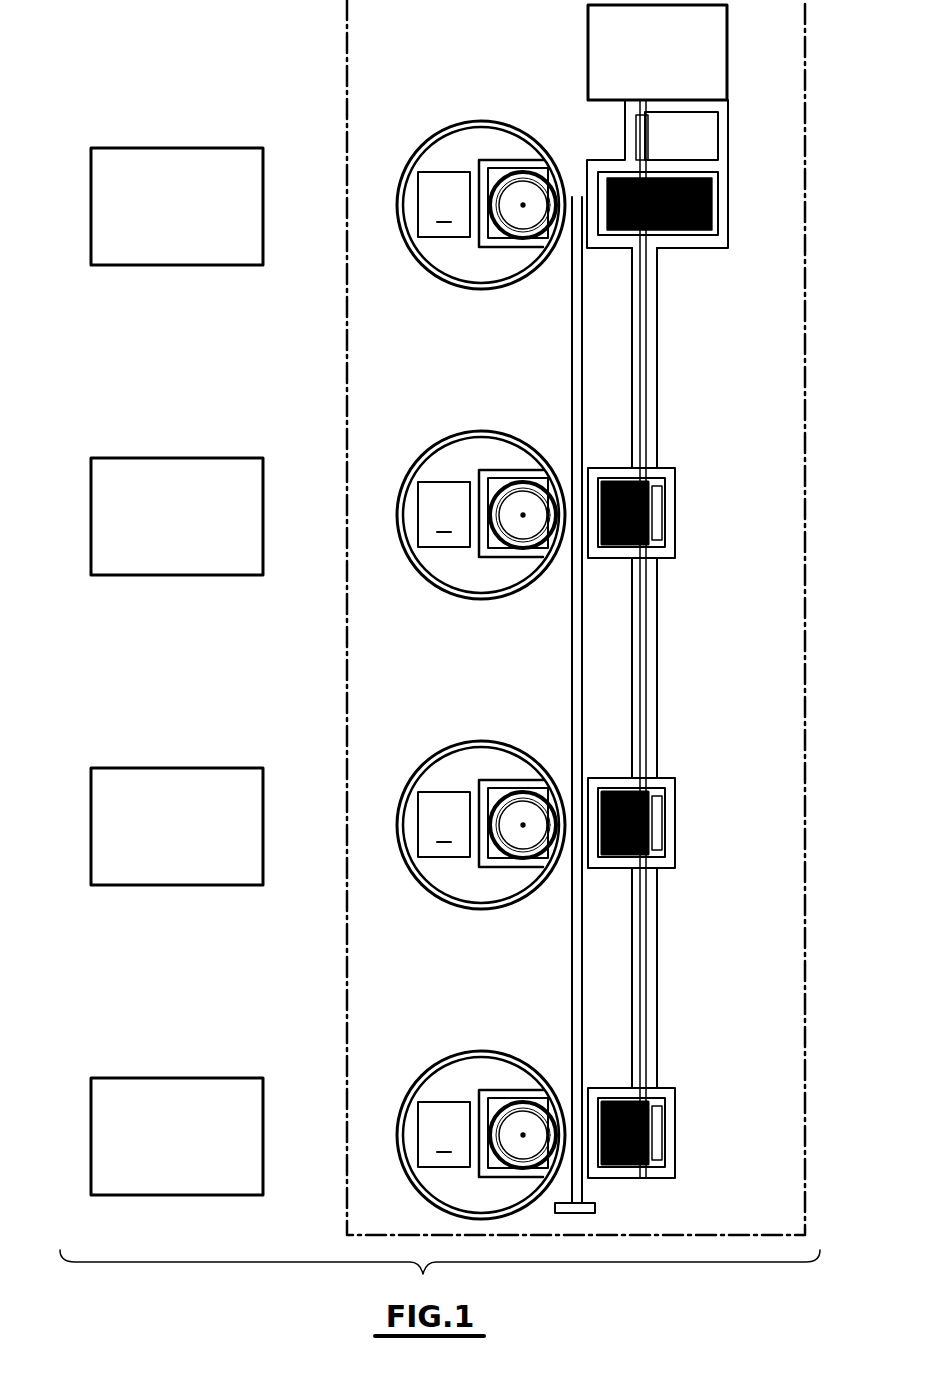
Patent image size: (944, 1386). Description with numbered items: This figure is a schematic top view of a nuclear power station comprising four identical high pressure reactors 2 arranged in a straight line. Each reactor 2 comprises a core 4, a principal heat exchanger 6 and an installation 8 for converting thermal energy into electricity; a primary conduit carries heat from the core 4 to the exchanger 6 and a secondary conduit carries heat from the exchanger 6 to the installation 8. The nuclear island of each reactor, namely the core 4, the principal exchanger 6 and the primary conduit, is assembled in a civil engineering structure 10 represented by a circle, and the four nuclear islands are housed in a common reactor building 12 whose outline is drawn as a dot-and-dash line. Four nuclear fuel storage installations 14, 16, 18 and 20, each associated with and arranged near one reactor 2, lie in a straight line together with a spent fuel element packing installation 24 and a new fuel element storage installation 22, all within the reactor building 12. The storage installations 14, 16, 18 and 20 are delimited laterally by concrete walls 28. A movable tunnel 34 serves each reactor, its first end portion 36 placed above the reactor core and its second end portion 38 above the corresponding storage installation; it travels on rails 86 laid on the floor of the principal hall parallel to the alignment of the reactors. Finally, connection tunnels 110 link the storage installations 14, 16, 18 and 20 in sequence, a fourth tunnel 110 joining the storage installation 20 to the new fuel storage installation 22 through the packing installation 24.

The high pressure reactor 2 is at (478, 628).
The core 4 is at (523, 188).
The principal heat exchanger 6 is at (444, 669).
The installation for converting thermal energy into electricity 8 is at (192, 178).
The civil engineering structure 10 is at (476, 119).
The reactor building 12 is at (808, 500).
The nuclear fuel storage installation 14 is at (665, 1180).
The nuclear fuel storage installation 16 is at (665, 872).
The nuclear fuel storage installation 18 is at (665, 562).
The nuclear fuel storage installation 20 is at (718, 250).
The new fuel element storage installation 22 is at (730, 70).
The spent fuel element packing installation 24 is at (700, 136).
The concrete wall 28 is at (672, 250).
The movable tunnel 34 is at (586, 1220).
The first end portion of the tunnel 36 is at (560, 1213).
The second end portion of the tunnel 38 is at (595, 1208).
The rails 86 is at (575, 325).
The connection tunnel 110 is at (625, 136).